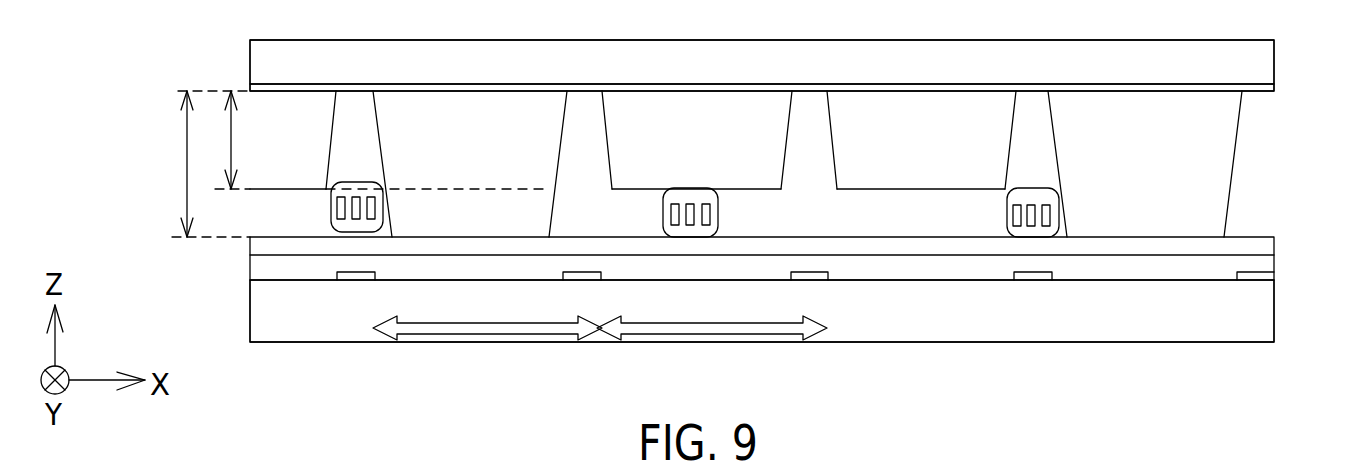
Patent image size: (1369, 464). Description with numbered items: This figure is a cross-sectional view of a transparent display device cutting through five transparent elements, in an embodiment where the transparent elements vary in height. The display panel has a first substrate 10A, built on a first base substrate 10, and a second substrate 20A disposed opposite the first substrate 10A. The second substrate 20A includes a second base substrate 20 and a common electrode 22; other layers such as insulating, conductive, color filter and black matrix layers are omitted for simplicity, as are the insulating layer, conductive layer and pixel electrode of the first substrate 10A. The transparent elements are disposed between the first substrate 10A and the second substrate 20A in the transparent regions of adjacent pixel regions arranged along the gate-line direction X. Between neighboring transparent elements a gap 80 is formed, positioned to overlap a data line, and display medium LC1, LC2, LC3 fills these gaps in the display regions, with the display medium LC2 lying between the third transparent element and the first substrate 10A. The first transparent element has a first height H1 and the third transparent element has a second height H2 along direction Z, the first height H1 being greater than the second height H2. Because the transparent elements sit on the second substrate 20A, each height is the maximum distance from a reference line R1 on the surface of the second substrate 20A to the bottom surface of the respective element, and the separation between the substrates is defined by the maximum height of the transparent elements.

The first base substrate 10 is at (1142, 326).
The first substrate 10A is at (1293, 237).
The second base substrate 20 is at (489, 70).
The second substrate 20A is at (1290, 40).
The common electrode 22 is at (1268, 91).
The gap 80 is at (583, 88).
The display medium LC1 is at (356, 182).
The display medium LC2 is at (690, 188).
The display medium LC3 is at (1030, 188).
The first height H1 is at (171, 164).
The second height H2 is at (214, 140).
The reference line R1 is at (217, 90).